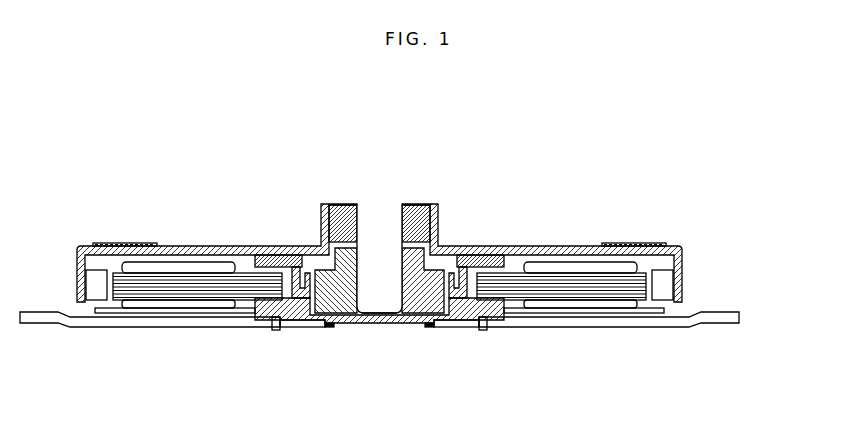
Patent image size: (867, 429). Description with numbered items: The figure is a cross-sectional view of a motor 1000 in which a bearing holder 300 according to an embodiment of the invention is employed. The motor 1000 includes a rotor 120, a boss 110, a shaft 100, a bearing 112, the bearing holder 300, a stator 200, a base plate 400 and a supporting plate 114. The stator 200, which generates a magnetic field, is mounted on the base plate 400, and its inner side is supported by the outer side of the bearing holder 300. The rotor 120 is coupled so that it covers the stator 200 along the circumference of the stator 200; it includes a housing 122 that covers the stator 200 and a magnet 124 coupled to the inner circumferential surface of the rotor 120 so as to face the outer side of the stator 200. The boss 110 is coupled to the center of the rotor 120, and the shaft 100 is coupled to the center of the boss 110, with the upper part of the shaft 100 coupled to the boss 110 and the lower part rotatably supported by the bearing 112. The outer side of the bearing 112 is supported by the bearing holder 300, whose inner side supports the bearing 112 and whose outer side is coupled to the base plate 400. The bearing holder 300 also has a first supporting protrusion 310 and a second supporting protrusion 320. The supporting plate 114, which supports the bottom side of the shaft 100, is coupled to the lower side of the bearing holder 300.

The motor 1000 is at (589, 131).
The shaft 100 is at (377, 218).
The boss 110 is at (416, 210).
The bearing 112 is at (323, 305).
The supporting plate 114 is at (387, 326).
The rotor 120 is at (757, 240).
The housing 122 is at (683, 247).
The magnet 124 is at (665, 287).
The stator 200 is at (600, 292).
The bearing holder 300 is at (457, 315).
The first supporting protrusion 310 is at (433, 325).
The second supporting protrusion 320 is at (483, 327).
The base plate 400 is at (682, 323).